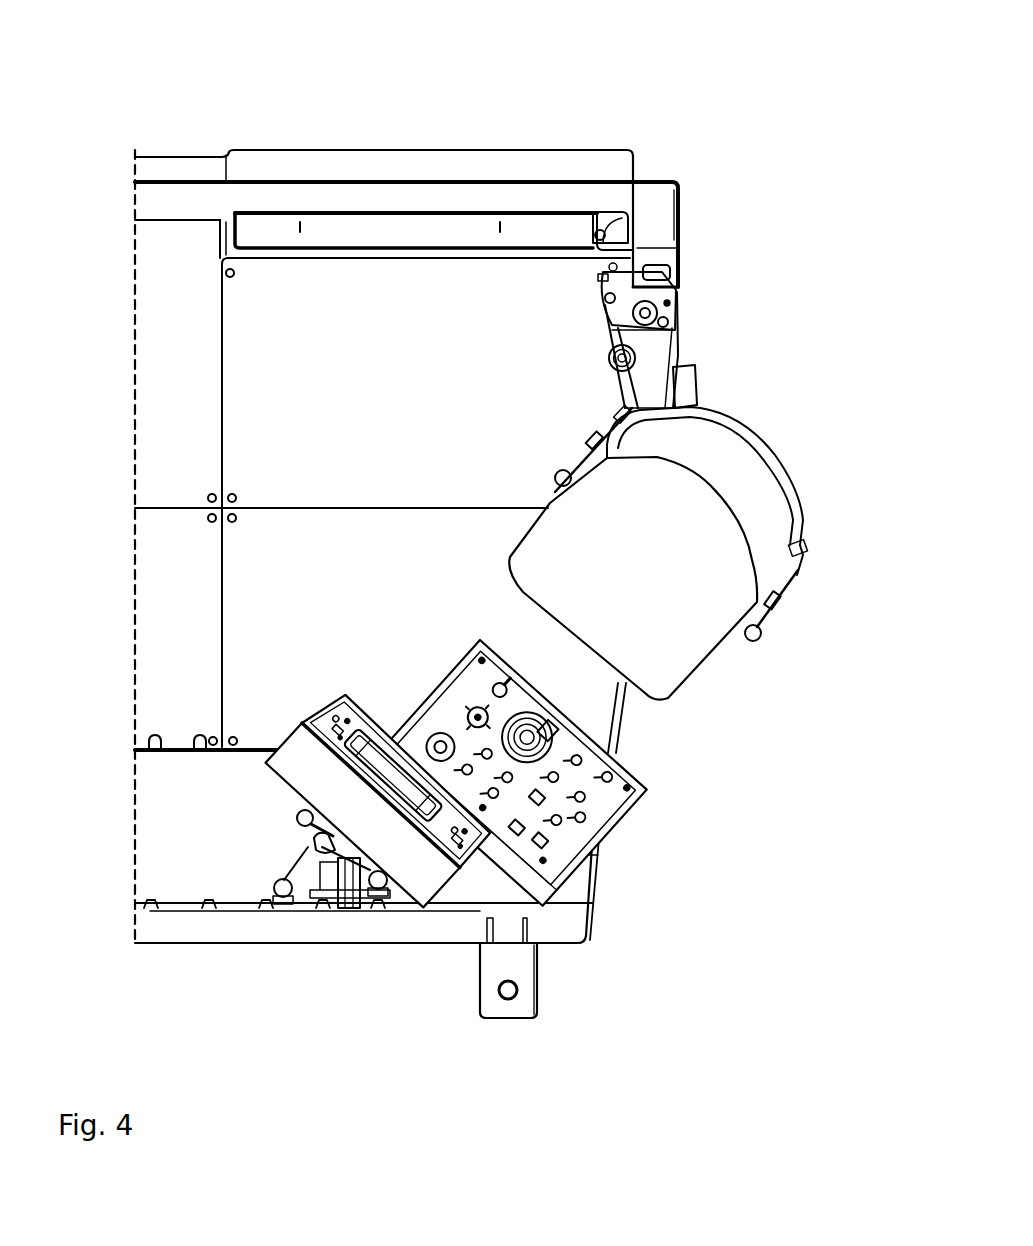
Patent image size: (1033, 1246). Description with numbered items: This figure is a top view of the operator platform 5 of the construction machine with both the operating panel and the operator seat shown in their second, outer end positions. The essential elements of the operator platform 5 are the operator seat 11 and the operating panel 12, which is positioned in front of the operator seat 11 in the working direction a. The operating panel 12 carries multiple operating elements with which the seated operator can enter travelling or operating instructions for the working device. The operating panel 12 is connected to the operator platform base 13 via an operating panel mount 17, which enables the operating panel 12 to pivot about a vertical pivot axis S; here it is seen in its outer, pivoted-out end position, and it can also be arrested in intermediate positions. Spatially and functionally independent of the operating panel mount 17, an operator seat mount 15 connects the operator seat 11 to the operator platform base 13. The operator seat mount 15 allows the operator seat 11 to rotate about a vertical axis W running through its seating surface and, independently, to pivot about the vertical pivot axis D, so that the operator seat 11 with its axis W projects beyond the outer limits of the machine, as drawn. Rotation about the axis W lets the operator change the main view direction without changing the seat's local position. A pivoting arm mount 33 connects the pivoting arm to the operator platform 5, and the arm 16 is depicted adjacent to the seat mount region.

The operator platform 5 is at (358, 106).
The operator platform base 13 is at (593, 262).
The pivoting arm mount 33 is at (668, 273).
The vertical pivot axis D is at (677, 293).
The operator seat mount 15 is at (571, 355).
The holding arm 16 is at (655, 385).
The vertical axis W is at (693, 512).
The operator seat 11 is at (703, 663).
The operating panel 12 is at (640, 800).
The vertical pivot axis S is at (535, 812).
The operating panel mount 17 is at (622, 883).
The working direction a is at (404, 977).